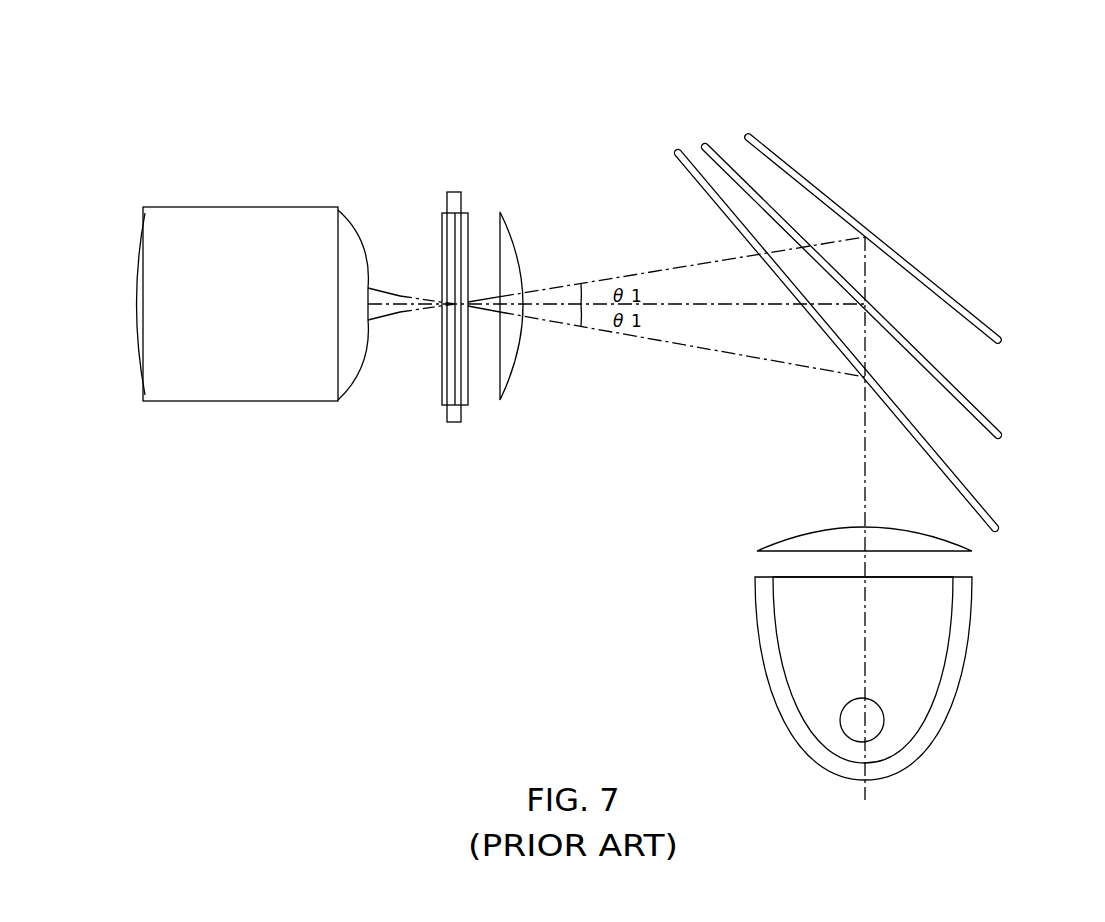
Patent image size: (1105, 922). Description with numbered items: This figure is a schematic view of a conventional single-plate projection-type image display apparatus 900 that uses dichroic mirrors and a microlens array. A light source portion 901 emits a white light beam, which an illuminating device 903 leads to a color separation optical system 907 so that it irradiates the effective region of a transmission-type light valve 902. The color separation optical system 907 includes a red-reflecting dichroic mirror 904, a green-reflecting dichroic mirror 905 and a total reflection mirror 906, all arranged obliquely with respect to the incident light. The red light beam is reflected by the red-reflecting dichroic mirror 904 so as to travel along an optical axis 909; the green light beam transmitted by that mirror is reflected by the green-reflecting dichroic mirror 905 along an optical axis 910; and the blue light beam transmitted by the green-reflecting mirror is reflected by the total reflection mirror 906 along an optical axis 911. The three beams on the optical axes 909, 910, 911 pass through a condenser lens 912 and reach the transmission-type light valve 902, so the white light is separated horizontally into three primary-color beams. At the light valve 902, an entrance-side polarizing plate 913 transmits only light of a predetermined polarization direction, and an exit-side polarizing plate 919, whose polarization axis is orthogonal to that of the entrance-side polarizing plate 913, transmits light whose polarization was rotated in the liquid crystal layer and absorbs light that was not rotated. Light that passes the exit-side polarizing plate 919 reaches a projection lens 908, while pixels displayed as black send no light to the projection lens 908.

The projection-type image display apparatus 900 is at (127, 64).
The light source portion 901 is at (998, 577).
The transmission-type light valve 902 is at (465, 304).
The illuminating device 903 is at (778, 542).
The red-reflecting dichroic mirror 904 is at (685, 152).
The green-reflecting dichroic mirror 905 is at (723, 158).
The total reflection mirror 906 is at (775, 155).
The color separation optical system 907 is at (807, 112).
The projection lens 908 is at (240, 207).
The optical axis 909 is at (730, 353).
The optical axis 910 is at (718, 307).
The optical axis 911 is at (685, 265).
The condenser lens 912 is at (512, 235).
The entrance-side polarizing plate 913 is at (468, 211).
The exit-side polarizing plate 919 is at (445, 212).